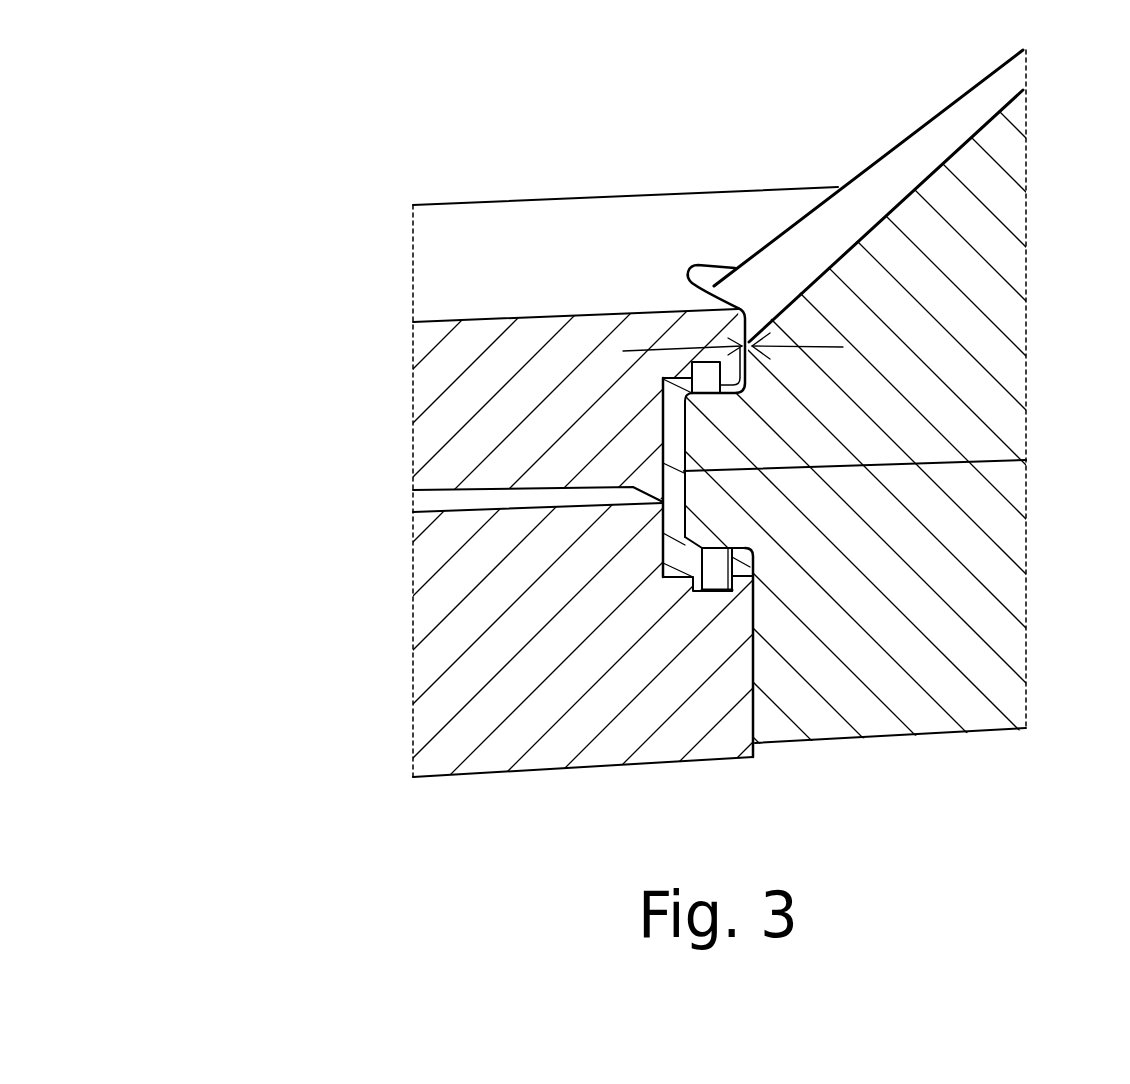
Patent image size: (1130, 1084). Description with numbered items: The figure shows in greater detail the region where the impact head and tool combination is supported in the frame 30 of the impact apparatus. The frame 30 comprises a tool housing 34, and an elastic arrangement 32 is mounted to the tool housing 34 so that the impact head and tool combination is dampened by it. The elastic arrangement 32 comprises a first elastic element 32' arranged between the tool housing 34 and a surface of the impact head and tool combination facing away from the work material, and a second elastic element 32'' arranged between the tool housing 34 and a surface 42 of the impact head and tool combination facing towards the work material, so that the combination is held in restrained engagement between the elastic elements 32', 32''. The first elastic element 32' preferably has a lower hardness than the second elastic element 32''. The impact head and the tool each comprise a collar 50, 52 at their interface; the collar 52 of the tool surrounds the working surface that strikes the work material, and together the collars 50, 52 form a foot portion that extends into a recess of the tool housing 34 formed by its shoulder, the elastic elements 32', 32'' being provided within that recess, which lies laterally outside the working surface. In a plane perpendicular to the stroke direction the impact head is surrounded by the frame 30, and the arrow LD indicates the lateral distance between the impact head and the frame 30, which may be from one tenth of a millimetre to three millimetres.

The frame 30 is at (507, 493).
The tool housing 34 is at (488, 263).
The elastic arrangement 32 is at (477, 365).
The first elastic element 32' is at (636, 244).
The second elastic element 32'' is at (477, 587).
The surface of the impact head and tool combination facing towards the work material 42 is at (753, 573).
The collar of the impact head 50 is at (708, 438).
The collar of the tool 52 is at (712, 522).
The lateral distance LD is at (797, 347).